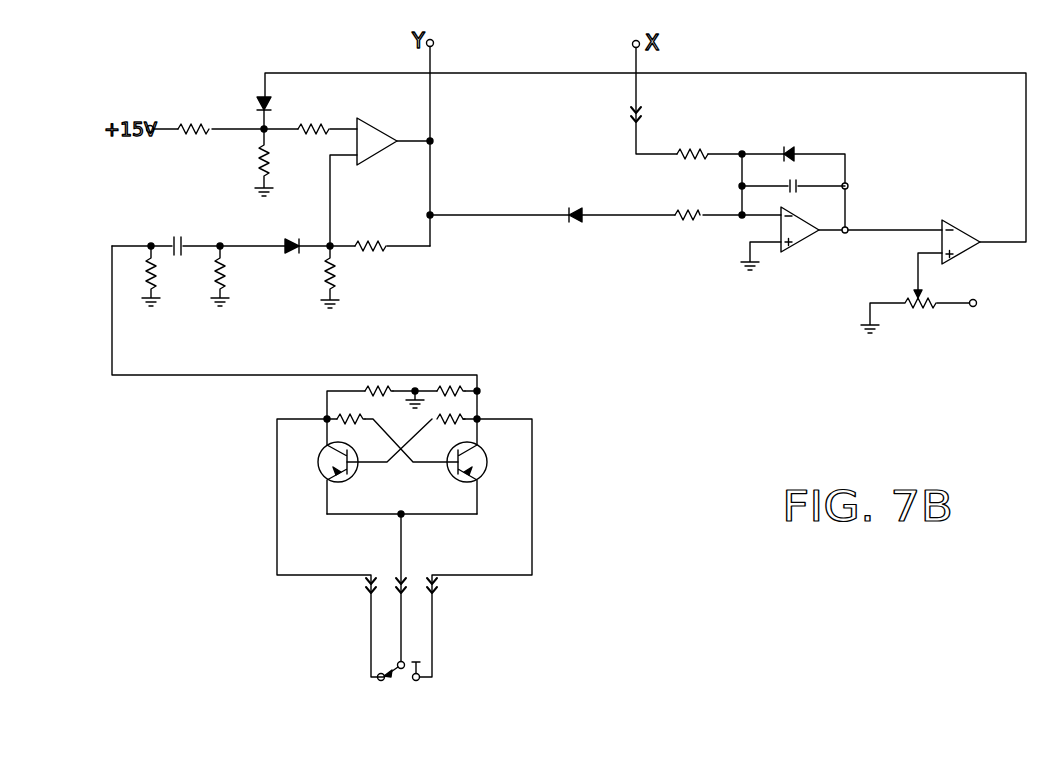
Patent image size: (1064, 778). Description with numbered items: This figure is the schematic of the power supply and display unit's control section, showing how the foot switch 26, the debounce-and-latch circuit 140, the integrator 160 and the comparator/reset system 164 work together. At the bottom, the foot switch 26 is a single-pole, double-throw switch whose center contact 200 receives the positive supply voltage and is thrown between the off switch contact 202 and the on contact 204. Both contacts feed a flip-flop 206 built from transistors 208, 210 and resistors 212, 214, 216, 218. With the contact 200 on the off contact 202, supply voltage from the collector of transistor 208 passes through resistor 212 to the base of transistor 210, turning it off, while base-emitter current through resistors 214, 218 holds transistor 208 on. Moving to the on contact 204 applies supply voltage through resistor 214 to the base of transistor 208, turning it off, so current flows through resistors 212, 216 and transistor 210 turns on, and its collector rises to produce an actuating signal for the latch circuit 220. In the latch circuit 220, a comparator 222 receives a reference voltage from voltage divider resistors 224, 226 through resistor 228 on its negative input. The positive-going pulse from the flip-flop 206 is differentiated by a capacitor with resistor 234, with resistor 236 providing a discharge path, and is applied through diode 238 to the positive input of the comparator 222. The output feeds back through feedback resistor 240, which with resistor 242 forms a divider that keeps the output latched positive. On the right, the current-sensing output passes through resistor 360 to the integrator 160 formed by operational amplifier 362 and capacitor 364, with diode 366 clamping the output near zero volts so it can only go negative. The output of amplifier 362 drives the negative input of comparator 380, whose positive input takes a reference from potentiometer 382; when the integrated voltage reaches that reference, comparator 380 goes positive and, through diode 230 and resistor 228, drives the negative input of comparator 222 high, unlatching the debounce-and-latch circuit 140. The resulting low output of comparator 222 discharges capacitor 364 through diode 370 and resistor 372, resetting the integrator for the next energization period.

The foot switch 26 is at (452, 681).
The debounce-and-latch circuit 140 is at (118, 194).
The integrator 160 is at (866, 136).
The comparator/reset system 164 is at (1000, 252).
The center contact 200 is at (375, 663).
The off switch contact 202 is at (370, 678).
The on contact 204 is at (441, 655).
The flip-flop 206 is at (548, 500).
The transistor 208 is at (322, 474).
The transistor 210 is at (486, 473).
The resistor 212 is at (333, 412).
The resistor 214 is at (462, 412).
The resistor 216 is at (376, 386).
The resistor 218 is at (447, 386).
The latch circuit 220 is at (161, 99).
The comparator 222 is at (382, 158).
The voltage divider resistor 224 is at (196, 123).
The voltage divider resistor 226 is at (259, 161).
The resistor 228 is at (307, 137).
The diode 230 is at (261, 99).
The resistor 234 is at (172, 237).
The resistor 236 is at (154, 273).
The diode 238 is at (292, 238).
The feedback resistor 240 is at (378, 254).
The resistor 242 is at (336, 279).
The resistor 360 is at (704, 150).
The operational amplifier 362 is at (801, 245).
The capacitor 364 is at (797, 191).
The diode 366 is at (790, 147).
The diode 370 is at (585, 222).
The resistor 372 is at (683, 222).
The comparator 380 is at (963, 229).
The potentiometer 382 is at (922, 311).